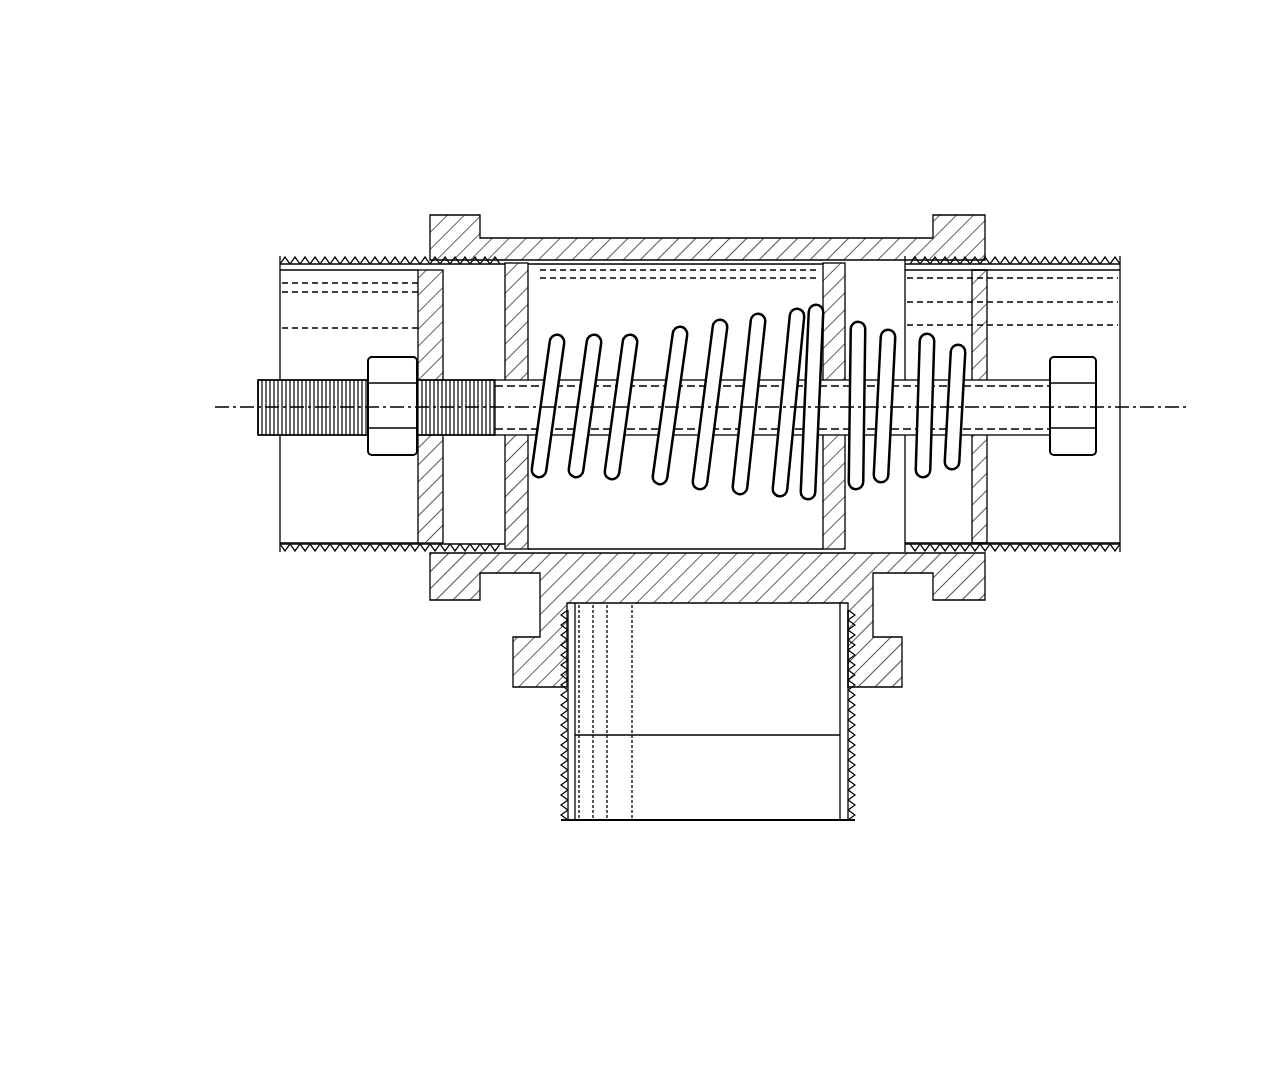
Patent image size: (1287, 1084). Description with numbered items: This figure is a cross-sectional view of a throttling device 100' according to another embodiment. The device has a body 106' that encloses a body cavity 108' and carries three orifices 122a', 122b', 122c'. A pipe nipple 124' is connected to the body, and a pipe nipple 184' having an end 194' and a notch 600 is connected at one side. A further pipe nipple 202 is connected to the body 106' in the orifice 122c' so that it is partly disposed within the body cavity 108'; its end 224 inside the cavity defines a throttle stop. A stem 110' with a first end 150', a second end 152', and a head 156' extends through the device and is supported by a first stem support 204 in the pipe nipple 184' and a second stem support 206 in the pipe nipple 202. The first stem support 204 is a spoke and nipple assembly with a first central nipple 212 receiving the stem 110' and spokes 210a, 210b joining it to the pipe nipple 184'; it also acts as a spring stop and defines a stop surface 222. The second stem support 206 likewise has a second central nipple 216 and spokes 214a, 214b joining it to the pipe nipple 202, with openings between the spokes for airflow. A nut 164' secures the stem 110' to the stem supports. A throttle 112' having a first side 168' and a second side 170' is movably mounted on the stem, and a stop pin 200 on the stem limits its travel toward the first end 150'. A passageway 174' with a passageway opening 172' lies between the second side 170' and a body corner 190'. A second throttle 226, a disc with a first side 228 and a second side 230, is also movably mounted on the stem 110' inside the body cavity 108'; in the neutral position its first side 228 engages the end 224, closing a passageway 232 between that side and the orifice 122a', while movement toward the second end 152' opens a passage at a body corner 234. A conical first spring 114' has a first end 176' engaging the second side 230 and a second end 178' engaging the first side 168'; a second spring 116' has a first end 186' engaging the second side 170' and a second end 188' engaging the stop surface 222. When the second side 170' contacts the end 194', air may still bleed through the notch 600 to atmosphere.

The throttling device 100' is at (700, 502).
The body 106' is at (748, 416).
The body cavity 108' is at (675, 362).
The stem 110' is at (605, 447).
The throttle 112' is at (860, 345).
The first spring 114' is at (677, 393).
The second spring 116' is at (936, 499).
The orifice 122a' is at (369, 379).
The orifice 122b' is at (1042, 357).
The orifice 122c' is at (754, 711).
The pipe nipple 124' is at (696, 711).
The first end 150' is at (604, 419).
The second end 152' is at (1146, 419).
The head 156' is at (1146, 411).
The nut 164' is at (353, 437).
The first side 168' is at (860, 345).
The second side 170' is at (997, 362).
The passageway opening 172' is at (748, 462).
The passageway 174' is at (748, 418).
The first end 176' is at (677, 411).
The second end 178' is at (860, 335).
The pipe nipple 184' is at (1010, 362).
The first end 186' is at (894, 406).
The second end 188' is at (1042, 406).
The body corner 190' is at (707, 451).
The end 194' is at (748, 418).
The stop pin 200 is at (815, 395).
The pipe nipple 202 is at (413, 259).
The first stem support 204 is at (992, 296).
The second stem support 206 is at (430, 510).
The spoke 210a is at (988, 318).
The spoke 210b is at (988, 487).
The first central nipple 212 is at (988, 360).
The spoke 214a is at (418, 262).
The spoke 214b is at (420, 512).
The second central nipple 216 is at (418, 368).
The stop surface 222 is at (978, 572).
The end 224 is at (522, 343).
The second throttle 226 is at (530, 290).
The first side 228 is at (490, 297).
The second side 230 is at (530, 298).
The passageway 232 is at (528, 497).
The body corner 234 is at (570, 556).
The notch 600 is at (917, 262).